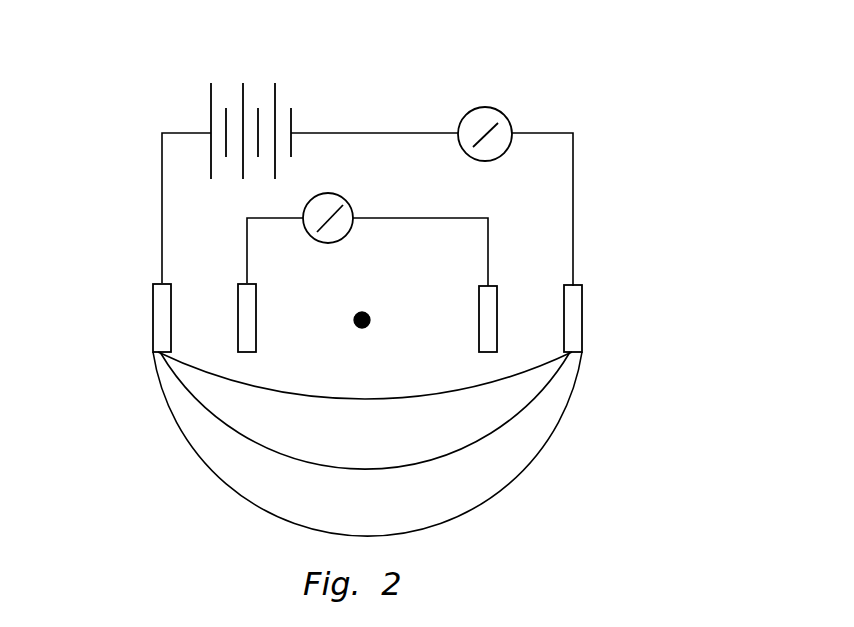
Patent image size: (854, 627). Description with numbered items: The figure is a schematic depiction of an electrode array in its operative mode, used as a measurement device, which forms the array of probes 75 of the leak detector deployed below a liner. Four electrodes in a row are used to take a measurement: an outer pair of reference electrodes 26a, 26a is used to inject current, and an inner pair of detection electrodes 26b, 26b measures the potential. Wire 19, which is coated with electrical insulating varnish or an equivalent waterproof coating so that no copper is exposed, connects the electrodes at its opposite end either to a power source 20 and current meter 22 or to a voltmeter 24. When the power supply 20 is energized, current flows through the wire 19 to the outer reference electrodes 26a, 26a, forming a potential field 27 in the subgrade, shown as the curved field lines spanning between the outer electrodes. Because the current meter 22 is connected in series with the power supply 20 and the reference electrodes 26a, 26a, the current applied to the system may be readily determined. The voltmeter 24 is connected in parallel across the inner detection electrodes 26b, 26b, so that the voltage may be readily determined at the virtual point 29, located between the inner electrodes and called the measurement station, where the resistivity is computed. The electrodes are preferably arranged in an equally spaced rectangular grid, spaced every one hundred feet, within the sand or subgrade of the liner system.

The array of probes 75 is at (622, 72).
The power source 20 is at (275, 83).
The current meter 22 is at (505, 115).
The voltmeter 24 is at (348, 200).
The wire 19 is at (162, 205).
The outer reference electrodes 26a is at (162, 318).
The inner detection electrodes 26b is at (252, 307).
The virtual point 29 is at (368, 306).
The potential field 27 is at (490, 497).